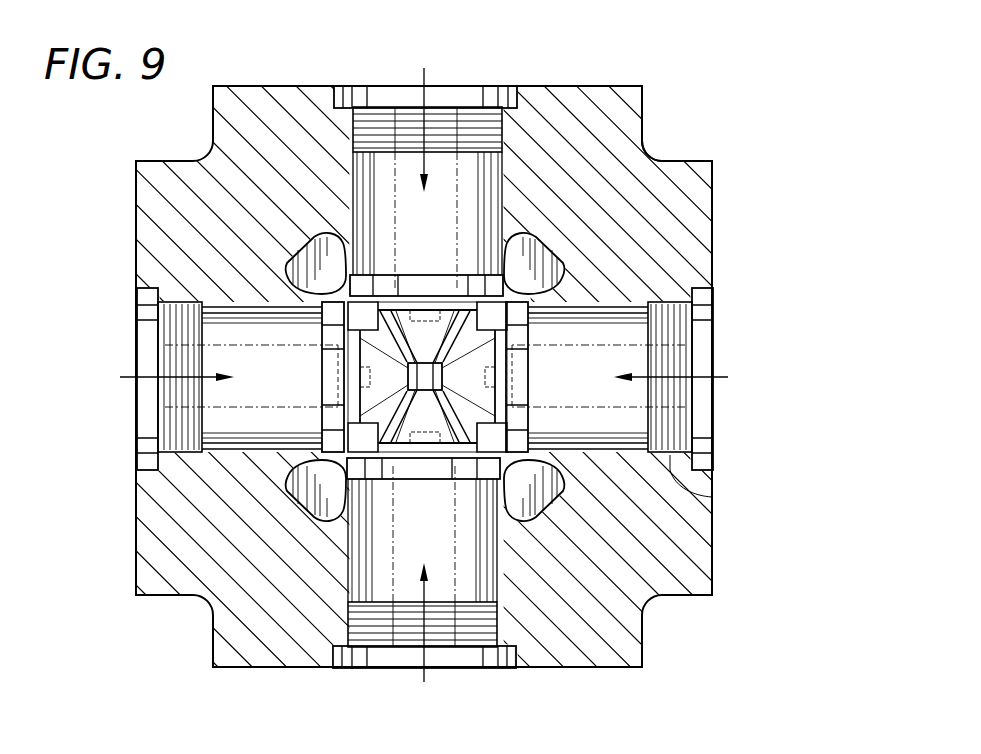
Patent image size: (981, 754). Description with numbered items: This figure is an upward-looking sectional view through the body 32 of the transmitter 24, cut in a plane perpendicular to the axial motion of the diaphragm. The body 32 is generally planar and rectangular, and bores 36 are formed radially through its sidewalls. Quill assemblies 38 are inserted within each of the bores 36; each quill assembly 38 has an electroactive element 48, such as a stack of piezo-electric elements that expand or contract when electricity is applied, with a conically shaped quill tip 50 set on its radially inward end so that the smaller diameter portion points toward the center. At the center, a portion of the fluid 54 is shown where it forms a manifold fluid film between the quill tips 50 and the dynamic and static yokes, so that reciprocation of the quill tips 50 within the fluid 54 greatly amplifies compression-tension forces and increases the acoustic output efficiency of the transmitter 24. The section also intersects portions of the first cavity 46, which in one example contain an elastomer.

The transmitter 24 is at (669, 54).
The body 32 is at (700, 152).
The bores 36 is at (712, 497).
The quill assemblies 38 is at (466, 79).
The first cavity 46 is at (540, 268).
The electroactive element 48 is at (633, 343).
The quill tips 50 is at (470, 380).
The fluid 54 is at (462, 418).